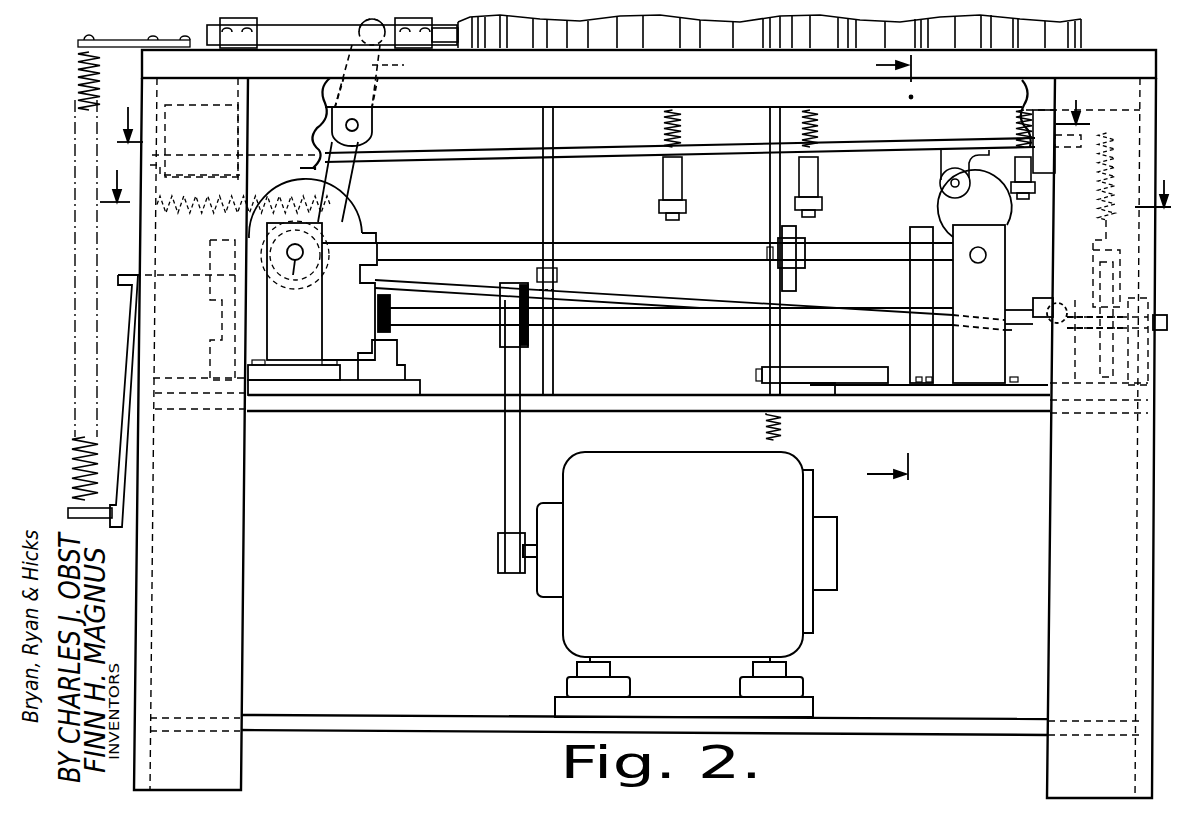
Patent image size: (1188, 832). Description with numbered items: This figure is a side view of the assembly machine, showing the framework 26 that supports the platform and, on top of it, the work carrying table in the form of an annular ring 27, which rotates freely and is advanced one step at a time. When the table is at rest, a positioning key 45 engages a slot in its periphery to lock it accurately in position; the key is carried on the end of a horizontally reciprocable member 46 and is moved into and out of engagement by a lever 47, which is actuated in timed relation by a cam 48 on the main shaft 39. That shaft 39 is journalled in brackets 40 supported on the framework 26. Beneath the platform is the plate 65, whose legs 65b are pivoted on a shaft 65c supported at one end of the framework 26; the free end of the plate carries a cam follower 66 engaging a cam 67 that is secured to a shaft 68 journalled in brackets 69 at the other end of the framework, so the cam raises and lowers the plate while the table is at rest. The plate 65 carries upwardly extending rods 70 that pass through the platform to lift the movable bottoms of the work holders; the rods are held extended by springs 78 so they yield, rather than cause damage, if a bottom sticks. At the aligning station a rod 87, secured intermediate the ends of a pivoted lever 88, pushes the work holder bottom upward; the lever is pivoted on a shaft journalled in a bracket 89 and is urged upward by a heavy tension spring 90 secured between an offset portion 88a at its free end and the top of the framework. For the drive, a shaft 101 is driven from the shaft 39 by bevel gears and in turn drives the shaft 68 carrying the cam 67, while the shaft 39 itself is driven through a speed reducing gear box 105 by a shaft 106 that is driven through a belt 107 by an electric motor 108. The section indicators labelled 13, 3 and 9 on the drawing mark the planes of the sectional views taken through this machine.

The framework 26 is at (237, 518).
The annular ring 27 is at (1081, 33).
The positioning key 45 is at (462, 43).
The horizontally reciprocable member 46 is at (316, 38).
The lever 47 is at (383, 62).
The cam 48 is at (253, 233).
The shaft 39 is at (333, 308).
The brackets 40 is at (349, 301).
The section line 13- 13 is at (613, 113).
The section line 3- 3 is at (635, 176).
The section line 9- 9 is at (883, 267).
The plate 65 is at (720, 150).
The legs 65b is at (392, 157).
The shaft 65c is at (197, 160).
The cam follower 66 is at (941, 180).
The cam 67 is at (948, 217).
The shaft 68 is at (988, 255).
The brackets 69 is at (1000, 278).
The upwardly extending rods 70 is at (664, 128).
The springs 78 is at (683, 128).
The rod 87 is at (553, 195).
The pivoted lever 88 is at (690, 293).
The offset portion 88a is at (122, 462).
The bracket 89 is at (1040, 353).
The heavy tension spring 90 is at (72, 480).
The shaft 101 is at (508, 242).
The speed reducing gear box 105 is at (373, 340).
The shaft 106 is at (578, 323).
The belt 107 is at (510, 473).
The electric motor 108 is at (609, 463).